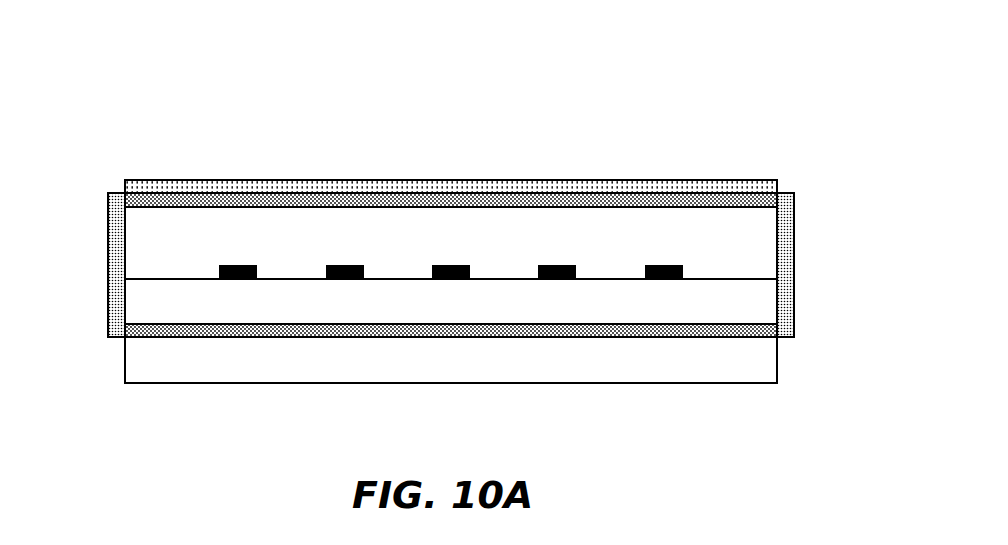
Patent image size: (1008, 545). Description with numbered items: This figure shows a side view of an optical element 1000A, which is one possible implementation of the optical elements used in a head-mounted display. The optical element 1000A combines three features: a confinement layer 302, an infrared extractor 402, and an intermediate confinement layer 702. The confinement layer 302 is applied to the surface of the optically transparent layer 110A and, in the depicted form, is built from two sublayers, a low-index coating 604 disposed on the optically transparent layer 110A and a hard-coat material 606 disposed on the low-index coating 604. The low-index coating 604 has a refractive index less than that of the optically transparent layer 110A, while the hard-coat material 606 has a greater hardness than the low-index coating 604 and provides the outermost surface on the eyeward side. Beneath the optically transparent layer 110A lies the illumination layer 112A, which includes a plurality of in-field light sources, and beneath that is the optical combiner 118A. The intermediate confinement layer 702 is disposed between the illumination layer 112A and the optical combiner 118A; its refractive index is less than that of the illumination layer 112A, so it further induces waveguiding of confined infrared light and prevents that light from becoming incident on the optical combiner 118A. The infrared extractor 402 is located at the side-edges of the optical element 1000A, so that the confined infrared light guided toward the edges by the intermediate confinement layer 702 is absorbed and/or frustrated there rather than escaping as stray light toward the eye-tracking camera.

The optical element 1000A is at (747, 105).
The optically transparent layer 110A is at (703, 230).
The illumination layer 112A is at (797, 265).
The optical combiner 118A is at (727, 373).
The confinement layer 302 is at (796, 180).
The infrared extractor 402 is at (109, 256).
The low-index coating 604 is at (184, 205).
The hard-coat material 606 is at (258, 187).
The intermediate confinement layer 702 is at (747, 330).